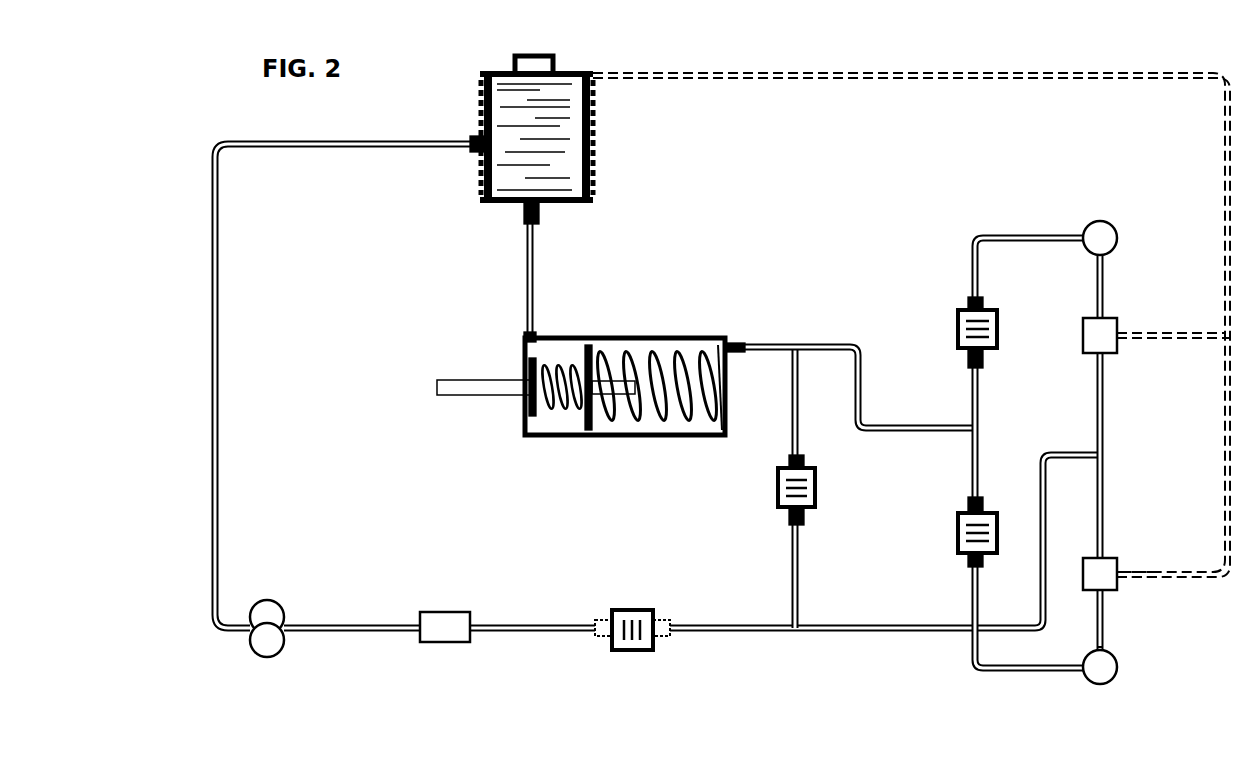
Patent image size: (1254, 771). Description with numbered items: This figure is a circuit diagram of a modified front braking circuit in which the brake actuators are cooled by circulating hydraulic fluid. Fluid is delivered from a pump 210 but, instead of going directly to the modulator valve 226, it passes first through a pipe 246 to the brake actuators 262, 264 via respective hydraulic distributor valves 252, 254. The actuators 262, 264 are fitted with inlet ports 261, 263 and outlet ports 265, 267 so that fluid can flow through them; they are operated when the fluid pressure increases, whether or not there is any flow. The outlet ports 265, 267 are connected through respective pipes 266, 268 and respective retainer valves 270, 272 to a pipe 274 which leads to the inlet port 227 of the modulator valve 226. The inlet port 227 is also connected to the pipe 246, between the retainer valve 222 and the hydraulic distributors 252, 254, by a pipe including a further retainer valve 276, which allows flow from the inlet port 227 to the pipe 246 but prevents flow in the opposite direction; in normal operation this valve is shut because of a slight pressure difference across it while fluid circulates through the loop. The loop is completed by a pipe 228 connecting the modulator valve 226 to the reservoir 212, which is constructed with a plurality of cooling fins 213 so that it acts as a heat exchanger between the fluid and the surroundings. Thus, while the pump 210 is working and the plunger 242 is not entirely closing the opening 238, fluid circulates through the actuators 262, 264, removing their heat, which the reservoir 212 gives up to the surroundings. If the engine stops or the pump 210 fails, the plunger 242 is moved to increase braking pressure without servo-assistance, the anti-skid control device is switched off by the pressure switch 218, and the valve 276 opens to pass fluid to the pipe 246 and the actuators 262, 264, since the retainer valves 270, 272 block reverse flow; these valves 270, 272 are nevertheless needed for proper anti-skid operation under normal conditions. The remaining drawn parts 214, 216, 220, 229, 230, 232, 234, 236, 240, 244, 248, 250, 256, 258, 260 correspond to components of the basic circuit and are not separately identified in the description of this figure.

The pump 210 is at (270, 617).
The reservoir 212 is at (483, 180).
The cooling fins 213 is at (590, 128).
The return line 214 is at (219, 373).
The line 216 is at (350, 628).
The pressure switch 218 is at (442, 620).
The line 220 is at (525, 628).
The retainer valve 222 is at (636, 610).
The modulator valve 226 is at (630, 436).
The inlet port 227 is at (745, 351).
The pipe 228 is at (527, 250).
The inlet port 229 is at (527, 334).
The spring 230 is at (686, 340).
The chamber 232 is at (697, 400).
The flange 234 is at (553, 400).
The piston 236 is at (570, 436).
The opening 238 is at (608, 362).
The end plate 240 is at (702, 355).
The plunger 242 is at (462, 392).
The spring 244 is at (558, 366).
The pipe 246 is at (863, 626).
The line 248 is at (1103, 397).
The line 250 is at (1103, 498).
The hydraulic distributor valve 252 is at (1079, 335).
The hydraulic distributor valve 254 is at (1113, 585).
The signal line 256 is at (1175, 330).
The signal line 258 is at (1163, 572).
The control line 260 is at (905, 77).
The inlet port 261 is at (1103, 258).
The brake actuator 262 is at (1100, 238).
The inlet port 263 is at (1100, 647).
The brake actuator 264 is at (1105, 665).
The outlet port 265 is at (1083, 238).
The pipe 266 is at (975, 238).
The outlet port 267 is at (1083, 668).
The pipe 268 is at (970, 645).
The retainer valve 270 is at (958, 325).
The retainer valve 272 is at (998, 520).
The pipe 274 is at (862, 392).
The retainer valve 276 is at (816, 490).